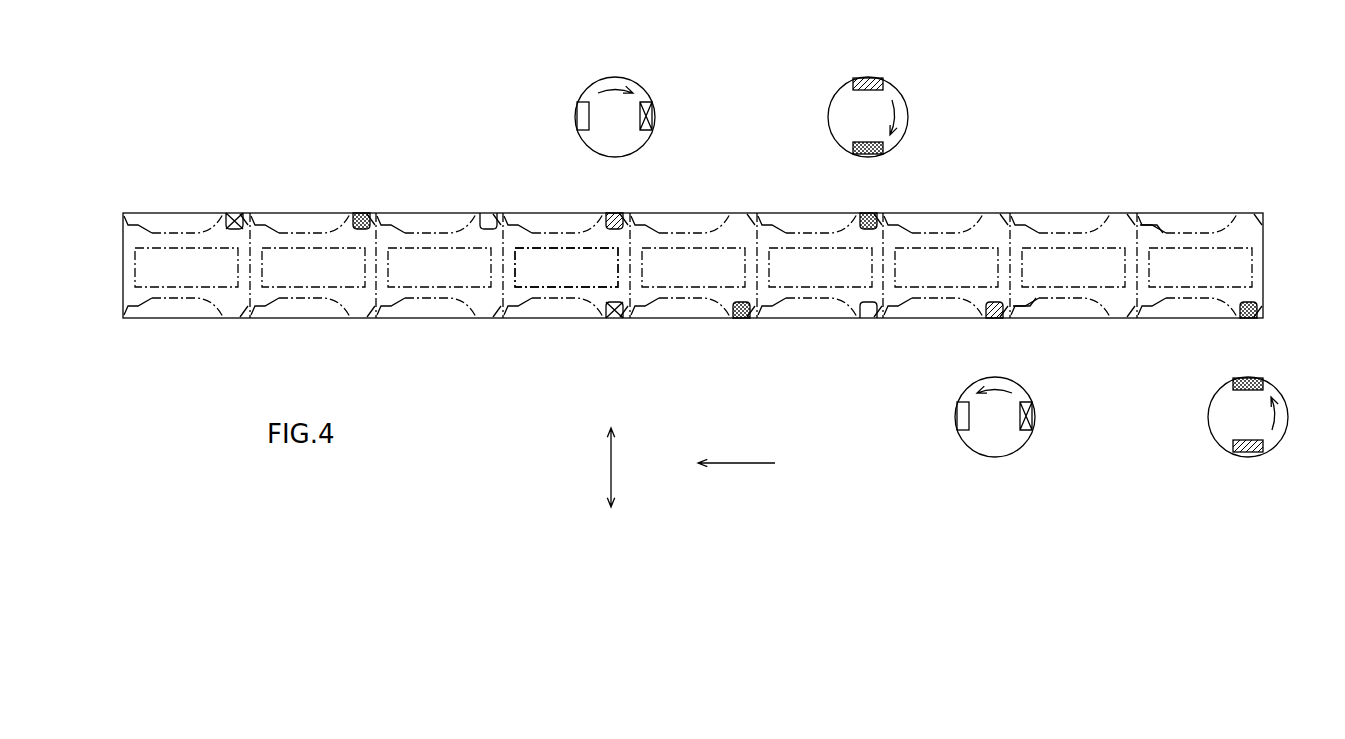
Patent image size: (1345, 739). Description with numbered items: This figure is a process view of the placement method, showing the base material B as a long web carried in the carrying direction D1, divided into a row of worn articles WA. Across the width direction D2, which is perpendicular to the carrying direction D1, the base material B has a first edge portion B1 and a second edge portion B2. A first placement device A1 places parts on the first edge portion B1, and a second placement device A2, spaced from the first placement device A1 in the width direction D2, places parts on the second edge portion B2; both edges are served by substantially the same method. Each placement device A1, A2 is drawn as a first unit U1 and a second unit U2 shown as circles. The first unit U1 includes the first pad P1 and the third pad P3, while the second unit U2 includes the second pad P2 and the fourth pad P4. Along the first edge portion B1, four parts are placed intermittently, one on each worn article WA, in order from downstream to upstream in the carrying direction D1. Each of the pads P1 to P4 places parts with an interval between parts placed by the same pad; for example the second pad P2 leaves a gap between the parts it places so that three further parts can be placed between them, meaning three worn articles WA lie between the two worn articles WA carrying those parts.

The base material B is at (1265, 257).
The first edge portion B1 is at (1065, 220).
The second edge portion B2 is at (1072, 313).
The worn article WA is at (540, 292).
The first placement device A1 is at (931, 247).
The second placement device A2 is at (1077, 472).
The first unit U1 is at (692, 126).
The second unit U2 is at (1017, 270).
The first pad P1 is at (854, 266).
The second pad P2 is at (1058, 266).
The third pad P3 is at (755, 266).
The fourth pad P4 is at (1058, 265).
The carrying direction D1 is at (736, 451).
The width direction D2 is at (628, 467).